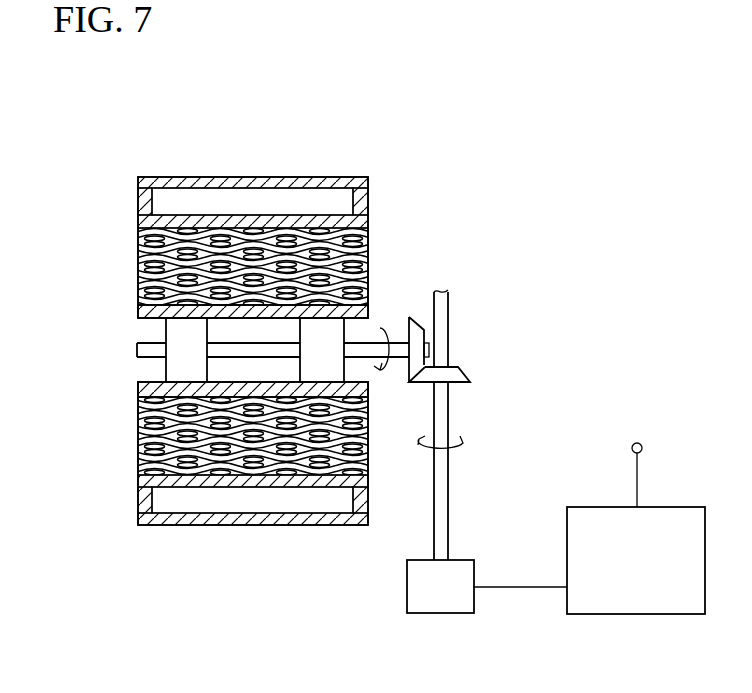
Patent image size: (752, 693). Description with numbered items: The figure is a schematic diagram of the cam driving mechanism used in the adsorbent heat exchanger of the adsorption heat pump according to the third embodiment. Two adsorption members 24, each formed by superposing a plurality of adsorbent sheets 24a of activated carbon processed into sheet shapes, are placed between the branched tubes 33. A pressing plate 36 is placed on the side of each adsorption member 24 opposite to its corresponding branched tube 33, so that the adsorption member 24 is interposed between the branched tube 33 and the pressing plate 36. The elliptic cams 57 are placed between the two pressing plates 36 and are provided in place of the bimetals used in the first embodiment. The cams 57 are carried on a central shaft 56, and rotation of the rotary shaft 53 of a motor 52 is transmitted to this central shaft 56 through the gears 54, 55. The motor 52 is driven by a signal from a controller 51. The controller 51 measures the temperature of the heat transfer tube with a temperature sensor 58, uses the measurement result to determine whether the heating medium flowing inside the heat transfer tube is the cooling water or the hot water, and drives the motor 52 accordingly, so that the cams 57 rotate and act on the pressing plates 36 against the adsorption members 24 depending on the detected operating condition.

The adsorption member 24 is at (138, 250).
The adsorbent sheet 24a is at (373, 258).
The branched tube 33 is at (340, 177).
The pressing plate 36 is at (138, 310).
The controller 51 is at (687, 507).
The motor 52 is at (407, 590).
The rotary shaft 53 is at (448, 503).
The gear 54 is at (465, 384).
The gear 55 is at (409, 373).
The central shaft 56 is at (135, 352).
The cam 57 is at (170, 331).
The temperature sensor 58 is at (631, 447).